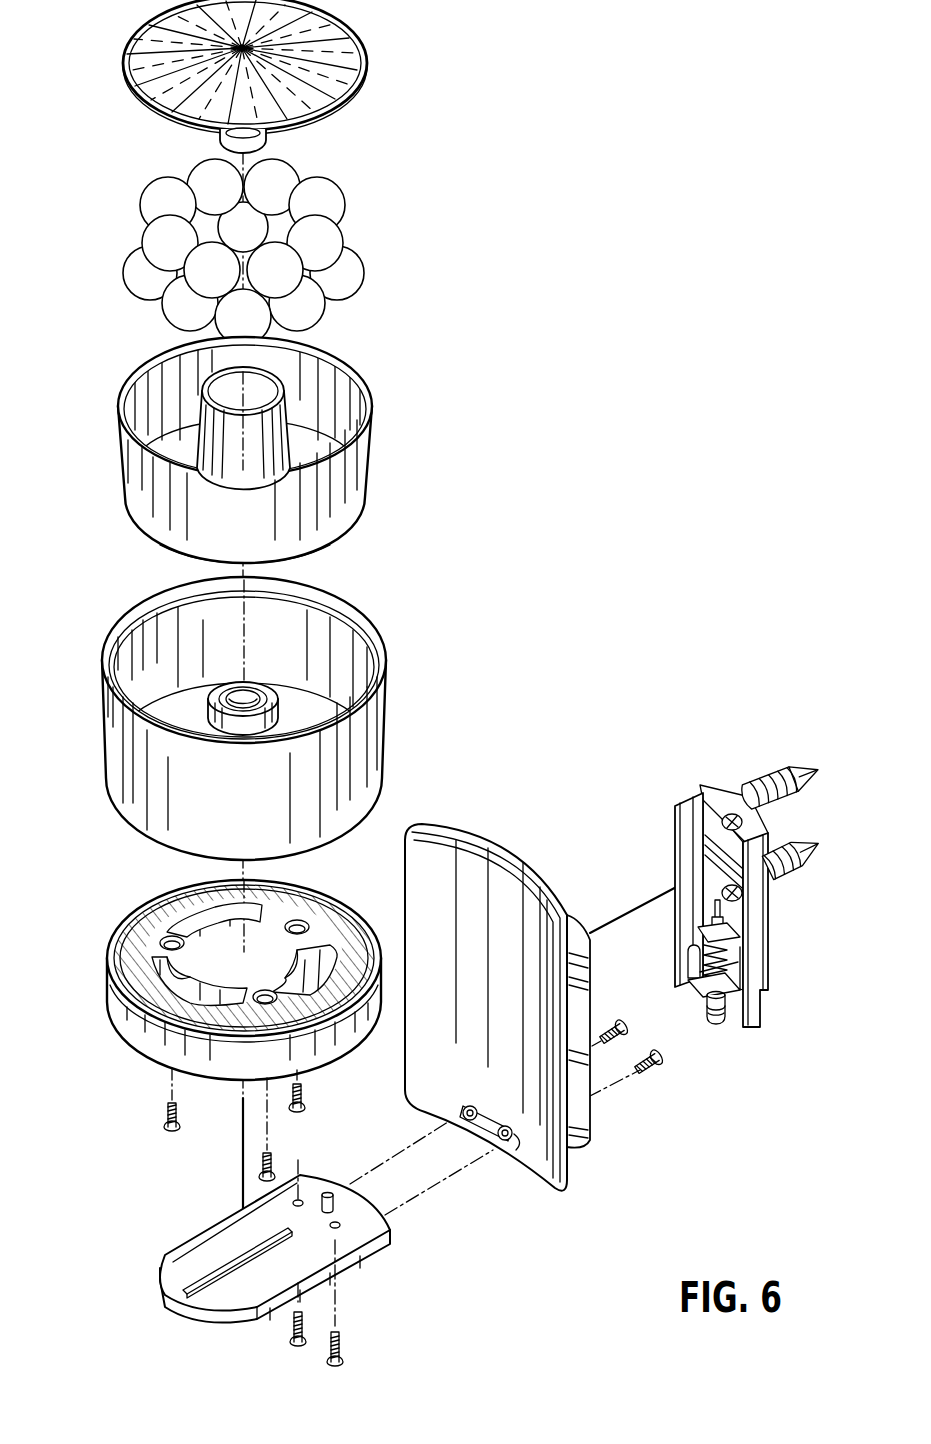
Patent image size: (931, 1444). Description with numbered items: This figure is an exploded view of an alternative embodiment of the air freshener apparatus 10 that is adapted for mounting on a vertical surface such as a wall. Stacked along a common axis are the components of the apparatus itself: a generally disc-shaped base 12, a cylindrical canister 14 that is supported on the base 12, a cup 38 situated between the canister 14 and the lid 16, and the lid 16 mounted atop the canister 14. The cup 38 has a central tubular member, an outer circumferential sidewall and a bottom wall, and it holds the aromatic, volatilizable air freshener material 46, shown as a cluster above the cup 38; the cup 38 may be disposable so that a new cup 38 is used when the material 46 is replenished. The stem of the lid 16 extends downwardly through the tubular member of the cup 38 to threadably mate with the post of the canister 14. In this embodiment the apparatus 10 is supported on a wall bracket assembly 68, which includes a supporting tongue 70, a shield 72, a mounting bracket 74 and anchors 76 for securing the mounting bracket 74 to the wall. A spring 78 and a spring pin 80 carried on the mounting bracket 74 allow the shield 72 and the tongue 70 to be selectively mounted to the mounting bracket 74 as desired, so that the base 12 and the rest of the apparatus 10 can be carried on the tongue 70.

The air freshener apparatus 10 is at (447, 222).
The base 12 is at (100, 980).
The canister 14 is at (92, 735).
The lid 16 is at (112, 60).
The cup 38 is at (112, 465).
The aromatic material 46 is at (128, 246).
The wall bracket assembly 68 is at (664, 1204).
The supporting tongue 70 is at (183, 1243).
The shield 72 is at (561, 905).
The mounting bracket 74 is at (673, 847).
The anchors 76 is at (792, 800).
The spring 78 is at (700, 982).
The spring pin 80 is at (719, 1026).